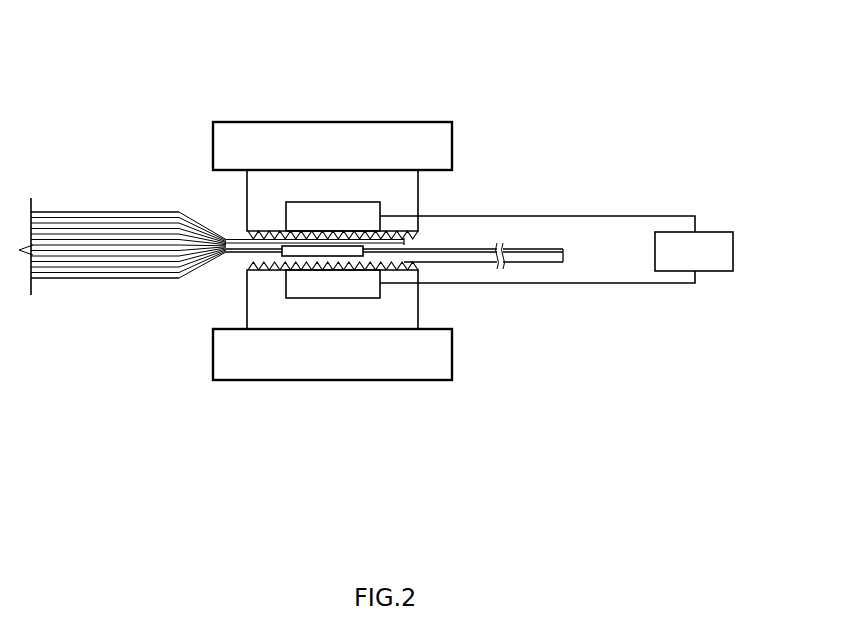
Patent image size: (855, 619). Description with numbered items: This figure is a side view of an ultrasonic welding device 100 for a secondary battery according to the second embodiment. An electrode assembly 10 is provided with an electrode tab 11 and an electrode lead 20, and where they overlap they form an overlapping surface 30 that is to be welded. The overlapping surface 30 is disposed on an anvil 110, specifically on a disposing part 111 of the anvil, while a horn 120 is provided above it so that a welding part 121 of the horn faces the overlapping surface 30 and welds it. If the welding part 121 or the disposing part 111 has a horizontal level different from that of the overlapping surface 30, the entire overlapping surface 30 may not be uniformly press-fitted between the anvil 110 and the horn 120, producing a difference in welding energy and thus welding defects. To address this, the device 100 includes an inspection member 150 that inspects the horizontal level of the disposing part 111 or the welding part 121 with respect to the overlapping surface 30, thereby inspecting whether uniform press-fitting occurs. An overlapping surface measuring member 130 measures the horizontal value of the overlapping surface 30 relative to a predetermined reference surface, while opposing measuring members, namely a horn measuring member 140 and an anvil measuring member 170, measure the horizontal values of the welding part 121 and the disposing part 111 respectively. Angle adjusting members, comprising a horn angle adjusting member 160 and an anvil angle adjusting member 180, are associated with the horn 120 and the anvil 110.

The ultrasonic welding device 100 is at (548, 86).
The electrode assembly 10 is at (97, 278).
The electrode tab 11 is at (243, 255).
The electrode lead 20 is at (565, 256).
The overlapping surface 30 is at (408, 252).
The anvil 110 is at (413, 303).
The disposing part 111 is at (263, 270).
The horn 120 is at (412, 193).
The welding part 121 is at (258, 230).
The overlapping surface measuring member 130 is at (307, 250).
The horn measuring member 140 is at (348, 208).
The inspection member 150 is at (733, 250).
The horn angle adjusting member 160 is at (417, 135).
The anvil measuring member 170 is at (328, 292).
The anvil angle adjusting member 180 is at (448, 353).